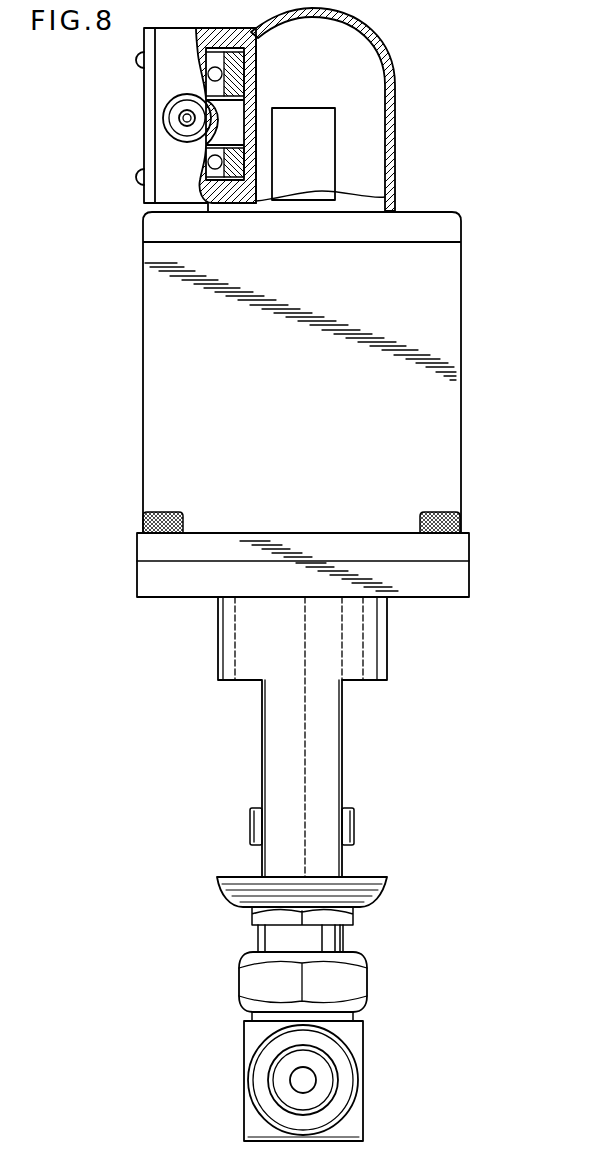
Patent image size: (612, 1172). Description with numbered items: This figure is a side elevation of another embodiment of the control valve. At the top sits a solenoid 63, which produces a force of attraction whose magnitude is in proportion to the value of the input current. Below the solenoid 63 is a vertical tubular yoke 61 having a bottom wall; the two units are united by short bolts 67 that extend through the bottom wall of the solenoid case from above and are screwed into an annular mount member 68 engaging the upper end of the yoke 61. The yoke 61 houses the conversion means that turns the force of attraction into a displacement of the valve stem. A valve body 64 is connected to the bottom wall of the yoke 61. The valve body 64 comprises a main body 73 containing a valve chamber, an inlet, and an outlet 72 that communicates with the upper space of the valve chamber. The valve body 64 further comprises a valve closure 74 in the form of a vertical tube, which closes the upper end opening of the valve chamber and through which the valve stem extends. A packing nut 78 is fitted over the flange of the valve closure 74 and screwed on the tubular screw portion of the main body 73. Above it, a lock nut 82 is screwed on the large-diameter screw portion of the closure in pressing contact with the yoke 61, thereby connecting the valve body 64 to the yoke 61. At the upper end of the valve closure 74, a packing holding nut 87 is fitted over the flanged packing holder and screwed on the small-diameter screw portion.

The vertical tubular yoke 61 is at (393, 660).
The solenoid 63 is at (447, 360).
The valve body 64 is at (228, 987).
The short bolts 67 is at (461, 515).
The annular mount member 68 is at (457, 582).
The outlet 72 is at (327, 1090).
The main body 73 is at (244, 1067).
The valve closure 74 is at (345, 940).
The packing nut 78 is at (350, 985).
The lock nut 82 is at (347, 917).
The packing holding nut 87 is at (354, 827).